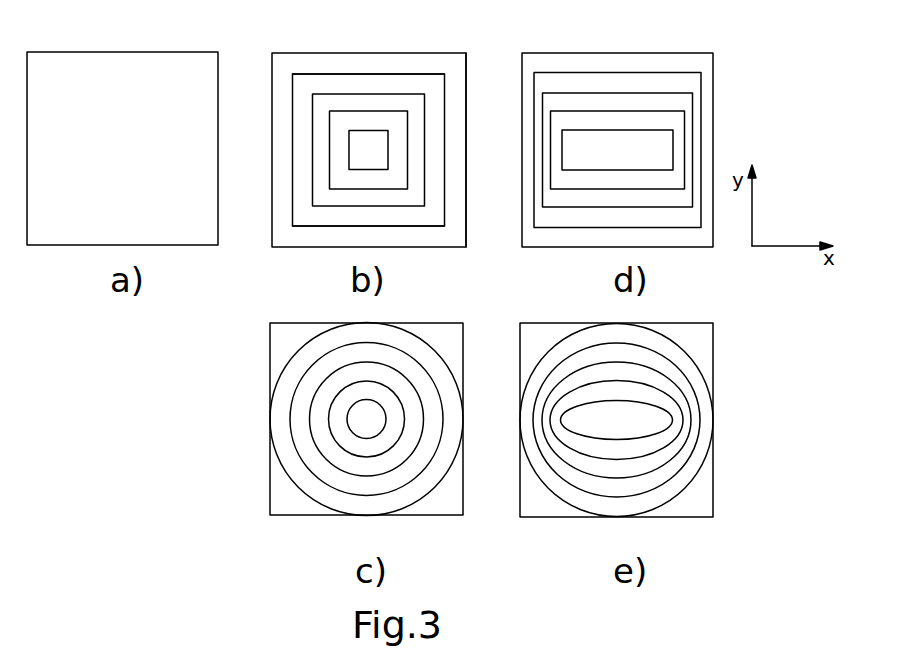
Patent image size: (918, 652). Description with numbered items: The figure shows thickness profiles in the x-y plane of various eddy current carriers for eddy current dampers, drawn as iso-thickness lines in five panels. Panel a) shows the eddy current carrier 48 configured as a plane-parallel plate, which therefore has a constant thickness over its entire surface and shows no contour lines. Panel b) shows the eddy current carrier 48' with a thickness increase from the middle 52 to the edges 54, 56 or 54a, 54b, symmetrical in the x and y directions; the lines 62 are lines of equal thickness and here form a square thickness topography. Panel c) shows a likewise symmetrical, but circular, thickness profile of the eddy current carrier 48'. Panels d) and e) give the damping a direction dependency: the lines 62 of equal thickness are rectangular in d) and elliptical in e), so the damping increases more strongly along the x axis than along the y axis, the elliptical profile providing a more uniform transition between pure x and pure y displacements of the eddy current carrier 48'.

The eddy current carrier 48 is at (122, 122).
The eddy current carrier 48' is at (492, 283).
The middle 52 is at (365, 155).
The edge 54 is at (282, 158).
The edge 54a is at (367, 63).
The edge 54b is at (397, 240).
The edge 56 is at (453, 150).
The lines of equal thickness 62 is at (329, 95).